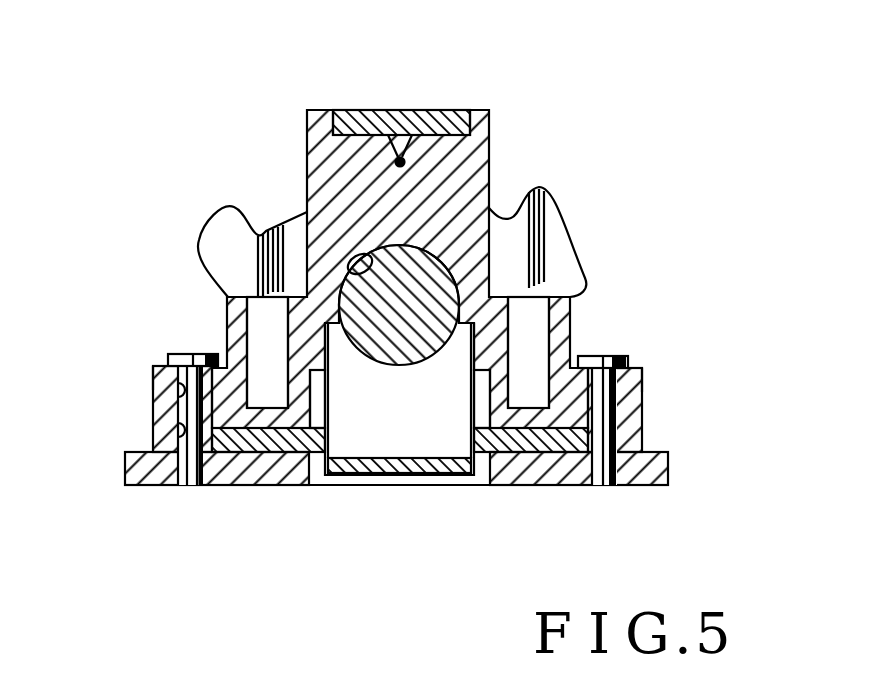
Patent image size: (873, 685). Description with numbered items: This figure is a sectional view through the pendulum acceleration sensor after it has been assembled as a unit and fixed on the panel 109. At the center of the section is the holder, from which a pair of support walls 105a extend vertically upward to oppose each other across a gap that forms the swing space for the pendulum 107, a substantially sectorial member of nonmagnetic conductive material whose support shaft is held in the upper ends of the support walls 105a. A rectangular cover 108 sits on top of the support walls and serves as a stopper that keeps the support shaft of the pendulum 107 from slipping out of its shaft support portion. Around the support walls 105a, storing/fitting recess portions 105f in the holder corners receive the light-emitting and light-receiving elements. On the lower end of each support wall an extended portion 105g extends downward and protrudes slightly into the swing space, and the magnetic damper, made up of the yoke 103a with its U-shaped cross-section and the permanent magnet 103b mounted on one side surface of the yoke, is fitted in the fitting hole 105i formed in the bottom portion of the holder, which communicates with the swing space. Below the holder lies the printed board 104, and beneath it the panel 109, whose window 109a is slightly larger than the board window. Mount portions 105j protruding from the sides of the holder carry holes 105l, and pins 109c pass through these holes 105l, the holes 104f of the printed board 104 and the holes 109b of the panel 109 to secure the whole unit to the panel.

The yoke 103a is at (396, 472).
The permanent magnet 103b is at (422, 398).
The printed board 104 is at (645, 438).
The holes 104f is at (178, 423).
The support walls 105a is at (490, 137).
The storing/fitting recess portions 105f is at (255, 300).
The extended portion 105g is at (355, 263).
The fitting hole 105i is at (297, 420).
The mount portions 105j is at (153, 377).
The holes 105l is at (178, 387).
The pendulum 107 is at (568, 205).
The cover 108 is at (440, 110).
The panel 109 is at (668, 467).
The window 109a is at (314, 445).
The holes 109b is at (182, 488).
The pins 109c is at (190, 355).